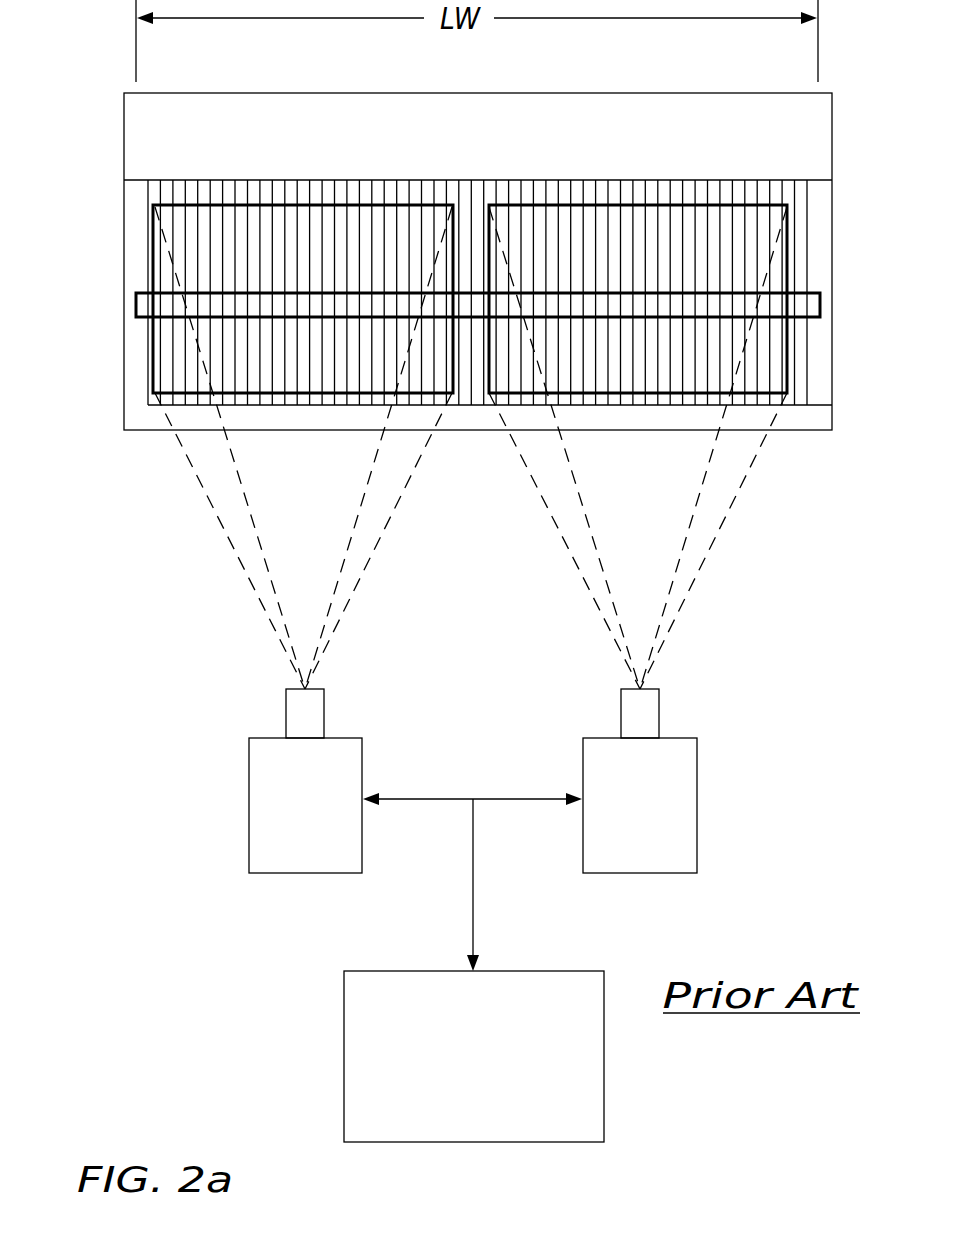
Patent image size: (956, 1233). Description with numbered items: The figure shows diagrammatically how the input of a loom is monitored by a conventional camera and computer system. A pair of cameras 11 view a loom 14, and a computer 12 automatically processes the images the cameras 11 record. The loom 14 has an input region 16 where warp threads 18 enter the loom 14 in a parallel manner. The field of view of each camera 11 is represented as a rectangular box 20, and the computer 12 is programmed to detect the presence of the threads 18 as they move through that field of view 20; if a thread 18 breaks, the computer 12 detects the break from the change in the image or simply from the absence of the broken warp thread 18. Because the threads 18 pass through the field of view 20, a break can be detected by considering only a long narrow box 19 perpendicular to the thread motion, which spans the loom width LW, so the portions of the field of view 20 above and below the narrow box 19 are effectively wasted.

The camera 11 is at (345, 762).
The computer 12 is at (360, 1013).
The loom 14 is at (92, 180).
The input region 16 is at (812, 378).
The warp threads 18 is at (150, 395).
The narrow box 19 is at (130, 312).
The rectangular box 20 is at (150, 262).